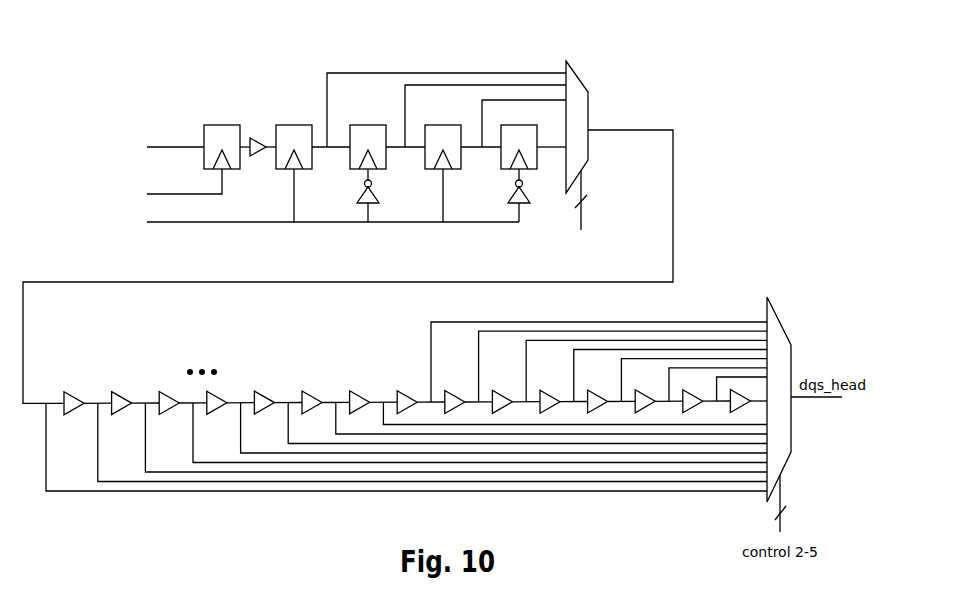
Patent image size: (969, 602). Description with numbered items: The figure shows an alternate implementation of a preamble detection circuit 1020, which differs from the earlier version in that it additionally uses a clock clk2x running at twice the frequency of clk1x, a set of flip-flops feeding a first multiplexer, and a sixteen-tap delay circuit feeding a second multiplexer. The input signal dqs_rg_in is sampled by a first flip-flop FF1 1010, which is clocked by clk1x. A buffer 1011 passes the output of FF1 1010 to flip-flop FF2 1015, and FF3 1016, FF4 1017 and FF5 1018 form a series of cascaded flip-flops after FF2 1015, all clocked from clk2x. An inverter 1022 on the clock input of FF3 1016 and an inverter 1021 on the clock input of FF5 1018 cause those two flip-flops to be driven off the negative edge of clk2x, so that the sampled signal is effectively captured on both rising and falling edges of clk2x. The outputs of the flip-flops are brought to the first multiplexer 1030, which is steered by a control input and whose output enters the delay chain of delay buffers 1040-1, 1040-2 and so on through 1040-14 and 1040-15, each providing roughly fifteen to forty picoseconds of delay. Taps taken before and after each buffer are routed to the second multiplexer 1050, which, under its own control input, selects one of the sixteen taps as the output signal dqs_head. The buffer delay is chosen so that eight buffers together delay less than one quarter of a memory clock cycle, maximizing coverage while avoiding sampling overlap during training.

The first flip-flop FF1 1010 is at (233, 125).
The buffer 1011 is at (258, 156).
The flip-flop FF2 1015 is at (286, 125).
The flip-flop FF3 1016 is at (360, 124).
The flip-flop FF4 1017 is at (434, 124).
The flip-flop FF5 1018 is at (528, 118).
The preamble detection circuit 1020 is at (119, 59).
The inverter 1021 is at (509, 199).
The inverter 1022 is at (357, 199).
The first multiplexer 1030 is at (588, 92).
The delay buffer 1040-1 is at (75, 381).
The delay buffer 1040-2 is at (117, 392).
The delay buffer 1040-14 is at (690, 392).
The delay buffer 1040-15 is at (742, 390).
The second multiplexer 1050 is at (792, 316).